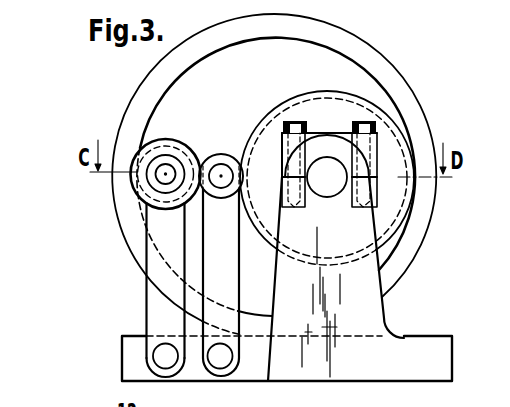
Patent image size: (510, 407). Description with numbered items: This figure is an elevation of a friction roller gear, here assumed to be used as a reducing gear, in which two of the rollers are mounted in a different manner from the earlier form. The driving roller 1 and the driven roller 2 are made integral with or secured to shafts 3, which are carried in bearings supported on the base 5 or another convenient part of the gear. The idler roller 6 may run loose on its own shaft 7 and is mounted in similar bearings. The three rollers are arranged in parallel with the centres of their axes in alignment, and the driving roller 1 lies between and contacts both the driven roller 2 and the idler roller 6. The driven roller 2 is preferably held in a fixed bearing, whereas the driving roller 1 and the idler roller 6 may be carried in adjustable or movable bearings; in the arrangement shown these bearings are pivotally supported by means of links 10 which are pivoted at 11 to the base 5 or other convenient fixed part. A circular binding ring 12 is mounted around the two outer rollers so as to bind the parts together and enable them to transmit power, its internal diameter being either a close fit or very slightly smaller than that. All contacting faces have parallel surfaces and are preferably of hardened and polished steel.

The driving roller 1 is at (219, 153).
The driven roller 2 is at (279, 103).
The shaft 3 is at (326, 179).
The base 5 is at (132, 354).
The idler roller 6 is at (153, 140).
The shaft 7 is at (163, 177).
The links 10 is at (157, 291).
The pivot 11 is at (217, 361).
The circular binding ring 12 is at (360, 55).